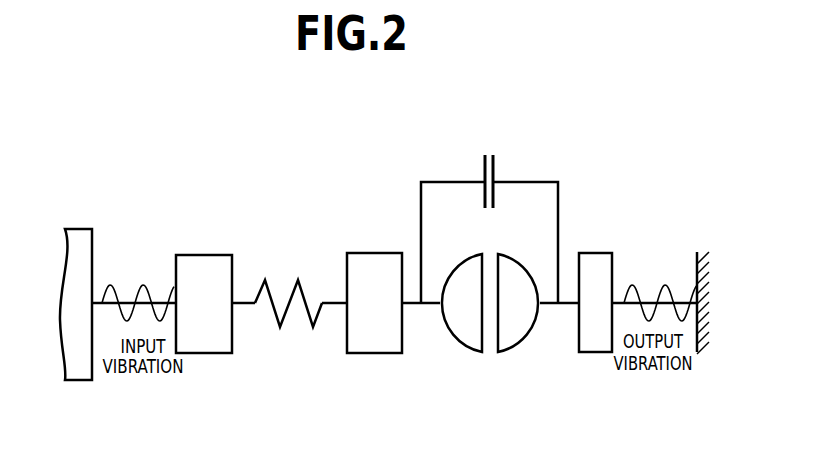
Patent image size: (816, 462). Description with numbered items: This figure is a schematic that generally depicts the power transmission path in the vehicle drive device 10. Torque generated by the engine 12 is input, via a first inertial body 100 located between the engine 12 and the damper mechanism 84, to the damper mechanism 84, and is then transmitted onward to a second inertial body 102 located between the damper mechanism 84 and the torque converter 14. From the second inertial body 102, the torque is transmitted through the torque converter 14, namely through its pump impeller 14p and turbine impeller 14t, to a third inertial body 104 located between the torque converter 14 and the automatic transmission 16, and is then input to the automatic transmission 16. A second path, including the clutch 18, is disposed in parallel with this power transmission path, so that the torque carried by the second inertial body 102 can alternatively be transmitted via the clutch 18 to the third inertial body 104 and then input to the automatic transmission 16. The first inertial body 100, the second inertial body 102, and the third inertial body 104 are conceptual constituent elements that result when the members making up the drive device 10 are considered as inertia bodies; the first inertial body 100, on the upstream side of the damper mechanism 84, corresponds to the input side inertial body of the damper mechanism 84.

The drive device 10 is at (612, 126).
The engine 12 is at (79, 370).
The torque converter 14 is at (488, 338).
The pump impeller 14p is at (460, 335).
The turbine impeller 14t is at (520, 333).
The automatic transmission 16 is at (707, 335).
The clutch 18 is at (494, 170).
The damper mechanism 84 is at (267, 323).
The first inertial body 100 is at (203, 262).
The second inertial body 102 is at (373, 262).
The third inertial body 104 is at (595, 262).